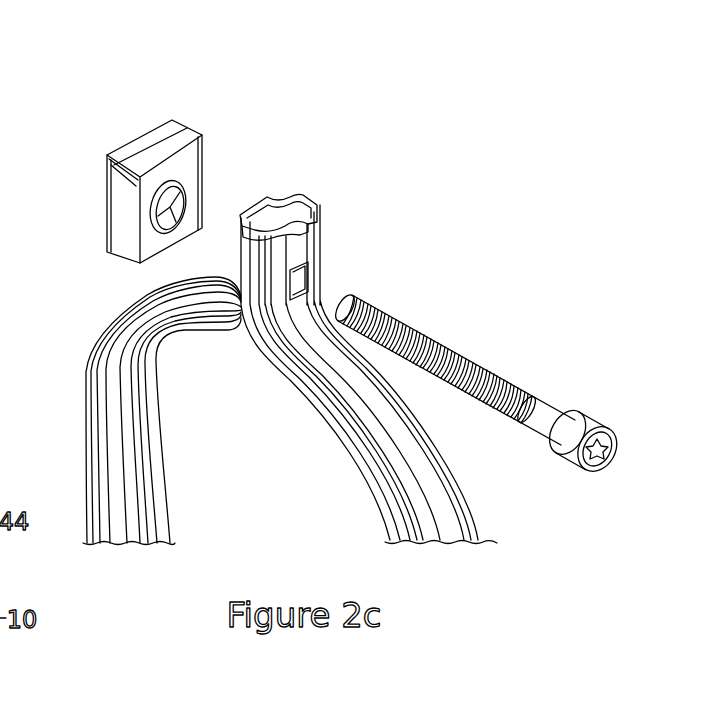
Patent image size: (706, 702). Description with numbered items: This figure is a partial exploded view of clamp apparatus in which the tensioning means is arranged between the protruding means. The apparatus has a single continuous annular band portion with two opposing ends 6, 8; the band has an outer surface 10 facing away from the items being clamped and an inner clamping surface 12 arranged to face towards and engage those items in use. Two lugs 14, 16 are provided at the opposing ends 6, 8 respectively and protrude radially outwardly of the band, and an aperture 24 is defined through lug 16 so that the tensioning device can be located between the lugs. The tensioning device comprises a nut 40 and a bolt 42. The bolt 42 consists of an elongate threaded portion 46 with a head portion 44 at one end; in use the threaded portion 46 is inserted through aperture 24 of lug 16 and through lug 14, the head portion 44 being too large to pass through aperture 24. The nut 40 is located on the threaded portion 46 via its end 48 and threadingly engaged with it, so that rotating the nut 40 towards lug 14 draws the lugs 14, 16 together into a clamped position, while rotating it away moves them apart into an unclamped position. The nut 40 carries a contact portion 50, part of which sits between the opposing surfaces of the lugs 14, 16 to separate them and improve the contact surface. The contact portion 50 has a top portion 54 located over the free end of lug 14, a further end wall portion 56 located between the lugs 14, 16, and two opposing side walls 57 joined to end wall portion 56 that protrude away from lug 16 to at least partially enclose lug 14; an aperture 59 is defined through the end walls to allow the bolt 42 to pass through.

The opposing end of band portion 6 is at (223, 345).
The opposing end of band portion 8 is at (258, 363).
The outer surface 10 is at (440, 495).
The inner clamping surface 12 is at (118, 515).
The lug 14 is at (288, 190).
The lug 16 is at (322, 193).
The aperture 24 is at (315, 277).
The nut 40 is at (112, 147).
The bolt 42 is at (502, 343).
The head portion 44 is at (587, 425).
The threaded portion 46 is at (433, 335).
The end of threaded portion 48 is at (358, 277).
The contact portion 50 is at (155, 148).
The top portion 54 is at (173, 135).
The further end wall portion 56 is at (185, 165).
The side walls 57 is at (123, 215).
The aperture 59 is at (138, 256).